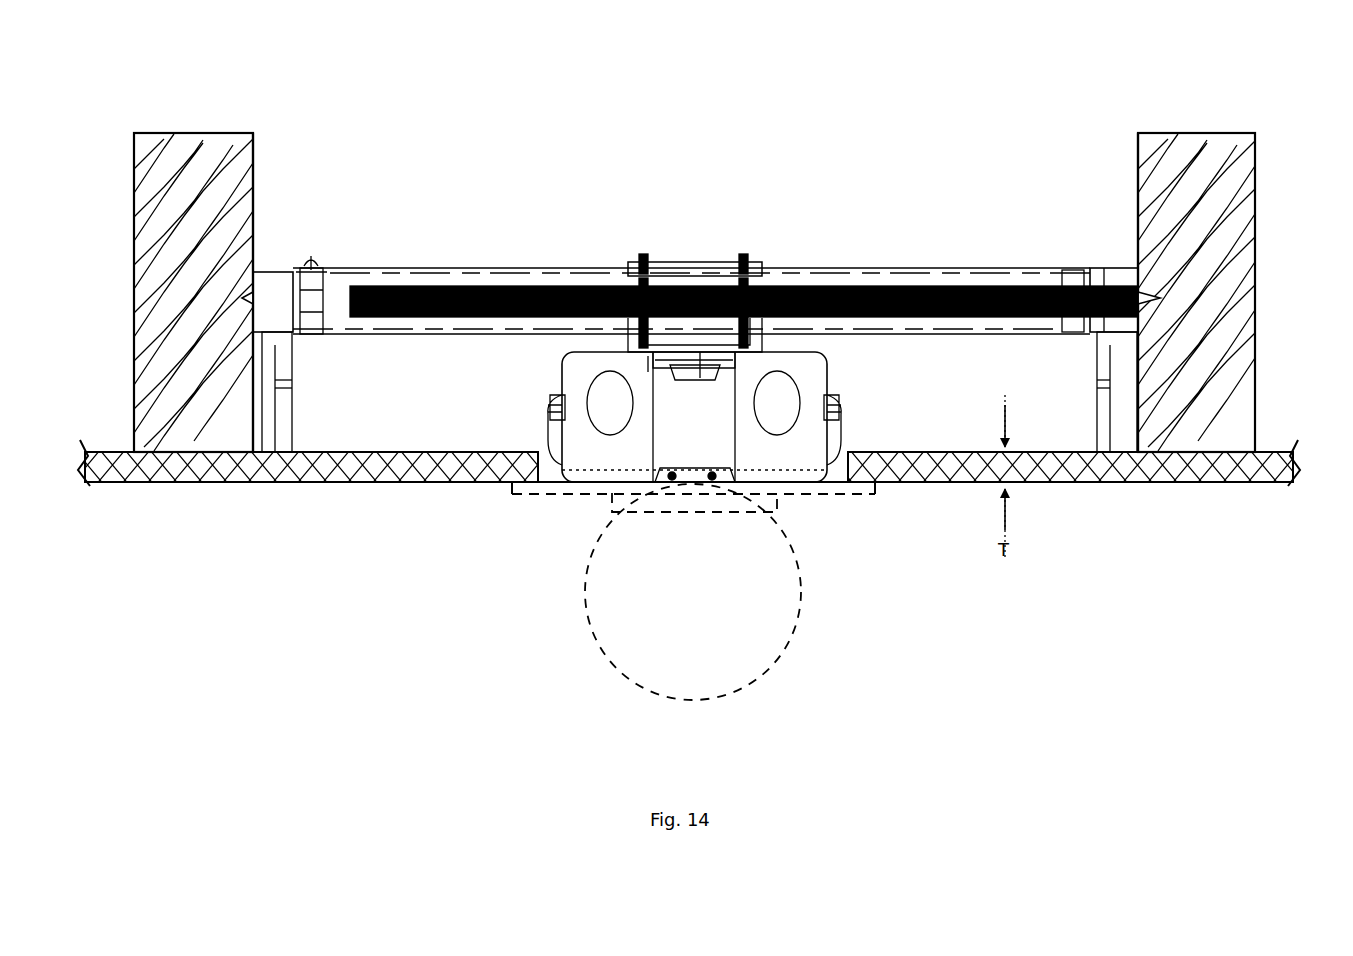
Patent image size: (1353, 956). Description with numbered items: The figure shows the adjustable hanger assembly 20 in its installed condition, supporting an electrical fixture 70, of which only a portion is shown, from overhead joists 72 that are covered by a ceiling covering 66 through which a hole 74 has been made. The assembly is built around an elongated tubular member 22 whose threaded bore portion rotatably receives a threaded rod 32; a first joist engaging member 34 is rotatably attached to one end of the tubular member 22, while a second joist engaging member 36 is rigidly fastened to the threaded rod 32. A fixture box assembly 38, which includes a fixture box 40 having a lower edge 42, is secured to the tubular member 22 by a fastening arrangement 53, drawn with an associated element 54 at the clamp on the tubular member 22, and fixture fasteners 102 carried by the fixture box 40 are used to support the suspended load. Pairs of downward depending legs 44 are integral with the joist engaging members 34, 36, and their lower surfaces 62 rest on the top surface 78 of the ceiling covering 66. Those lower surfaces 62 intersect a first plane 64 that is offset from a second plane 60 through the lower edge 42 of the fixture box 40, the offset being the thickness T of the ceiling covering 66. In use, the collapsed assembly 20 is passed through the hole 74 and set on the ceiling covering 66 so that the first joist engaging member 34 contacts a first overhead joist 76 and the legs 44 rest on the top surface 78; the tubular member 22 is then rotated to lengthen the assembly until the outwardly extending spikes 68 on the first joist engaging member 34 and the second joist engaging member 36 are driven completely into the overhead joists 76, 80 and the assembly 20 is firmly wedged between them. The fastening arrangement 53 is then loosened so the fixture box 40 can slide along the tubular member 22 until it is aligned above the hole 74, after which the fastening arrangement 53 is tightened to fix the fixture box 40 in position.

The adjustable hanger assembly 20 is at (862, 208).
The elongated tubular member 22 is at (967, 270).
The threaded rod 32 is at (405, 292).
The first joist engaging member 34 is at (1115, 268).
The second joist engaging member 36 is at (272, 272).
The fixture box assembly 38 is at (830, 360).
The fixture box 40 is at (608, 418).
The lower edge 42 is at (785, 484).
The downward depending legs 44 is at (290, 360).
The fastening arrangement 53 is at (622, 252).
The bolt 54 is at (748, 258).
The second plane 60 is at (492, 484).
The lower surfaces 62 is at (1103, 462).
The first plane 64 is at (492, 452).
The ceiling covering 66 is at (292, 484).
The outwardly extending spikes 68 is at (252, 296).
The electrical fixture 70 is at (693, 592).
The overhead joists 72 is at (125, 210).
The hole 74 is at (840, 470).
The first overhead joist 76 is at (1138, 150).
The top surface 78 is at (300, 447).
The overhead joist 80 is at (253, 160).
The fixture fasteners 102 is at (672, 482).